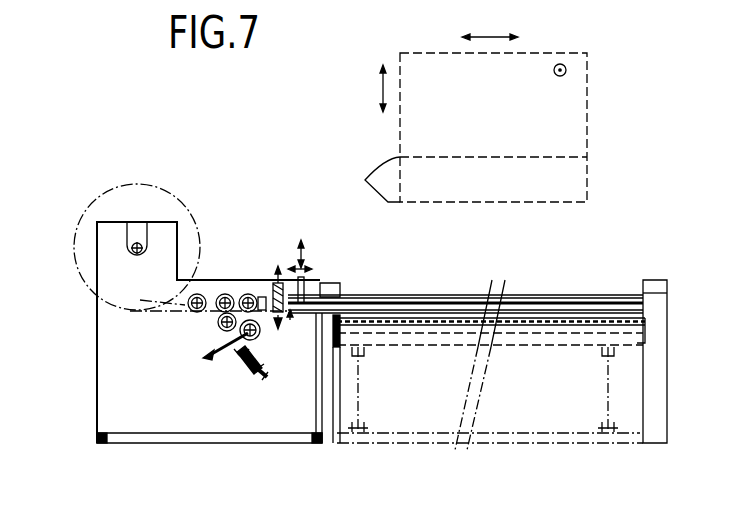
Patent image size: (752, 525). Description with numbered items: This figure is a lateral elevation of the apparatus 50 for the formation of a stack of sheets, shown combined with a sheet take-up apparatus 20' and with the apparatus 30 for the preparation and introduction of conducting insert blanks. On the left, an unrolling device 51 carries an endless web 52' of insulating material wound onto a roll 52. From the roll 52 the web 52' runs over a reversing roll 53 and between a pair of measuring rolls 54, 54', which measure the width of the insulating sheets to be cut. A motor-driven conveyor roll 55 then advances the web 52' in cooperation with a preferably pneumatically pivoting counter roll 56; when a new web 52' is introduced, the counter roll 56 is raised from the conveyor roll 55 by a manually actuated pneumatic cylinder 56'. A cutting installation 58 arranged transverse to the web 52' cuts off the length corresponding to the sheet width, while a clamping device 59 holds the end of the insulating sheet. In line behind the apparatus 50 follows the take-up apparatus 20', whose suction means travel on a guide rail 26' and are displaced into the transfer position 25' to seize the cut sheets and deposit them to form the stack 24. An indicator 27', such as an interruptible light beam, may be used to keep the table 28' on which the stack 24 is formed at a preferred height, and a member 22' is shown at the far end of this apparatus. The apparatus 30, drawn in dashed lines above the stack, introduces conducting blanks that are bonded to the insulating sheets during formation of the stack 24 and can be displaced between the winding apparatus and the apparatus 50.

The apparatus for the formation of a sheet stack 50 is at (128, 135).
The roll 52 is at (146, 232).
The unrolling device 51 is at (127, 248).
The web of insulating material 52' is at (161, 343).
The reversing roll 53 is at (199, 292).
The measuring roll 54 is at (252, 253).
The conveyor roll 55 is at (257, 297).
The measuring roll 54' is at (177, 410).
The counter roll 56 is at (209, 414).
The pneumatic cylinder 56' is at (233, 427).
The cutting installation 58 is at (261, 313).
The clamping device 59 is at (280, 313).
The transfer position of the suction means 25' is at (328, 257).
The conveyor frame 20' is at (479, 336).
The guide rail 26' is at (465, 266).
The stack 24 is at (643, 313).
The pivot arm 27' is at (494, 335).
The support column 28' is at (483, 427).
The end post 22' is at (640, 394).
The apparatus for the preparation and introduction of conducting blanks 30 is at (502, 112).